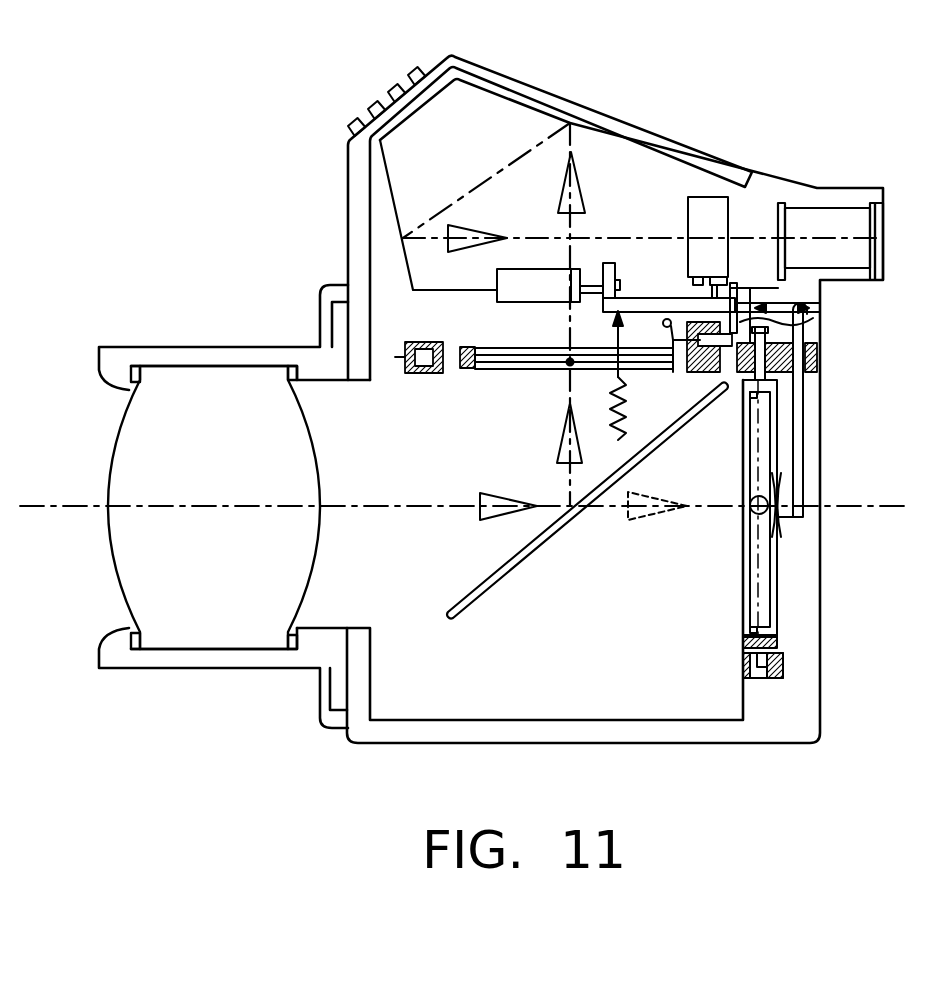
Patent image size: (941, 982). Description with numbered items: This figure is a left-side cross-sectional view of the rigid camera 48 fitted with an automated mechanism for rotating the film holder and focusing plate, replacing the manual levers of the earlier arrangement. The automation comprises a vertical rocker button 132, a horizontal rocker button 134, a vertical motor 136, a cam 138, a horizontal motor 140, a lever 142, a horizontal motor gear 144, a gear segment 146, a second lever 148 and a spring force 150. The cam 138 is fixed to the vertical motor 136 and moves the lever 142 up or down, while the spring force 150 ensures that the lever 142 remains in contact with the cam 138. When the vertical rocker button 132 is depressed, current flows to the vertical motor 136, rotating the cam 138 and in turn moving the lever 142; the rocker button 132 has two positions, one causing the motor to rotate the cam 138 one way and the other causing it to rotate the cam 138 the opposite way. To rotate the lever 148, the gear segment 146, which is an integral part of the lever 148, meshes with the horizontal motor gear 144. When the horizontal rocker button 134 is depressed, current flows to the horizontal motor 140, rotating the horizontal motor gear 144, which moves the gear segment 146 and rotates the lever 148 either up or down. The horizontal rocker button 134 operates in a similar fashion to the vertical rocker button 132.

The rigid camera 48 is at (218, 257).
The vertical rocker button 132 is at (413, 63).
The horizontal rocker button 134 is at (377, 96).
The vertical motor 136 is at (553, 268).
The cam 138 is at (610, 263).
The horizontal motor 140 is at (707, 197).
The lever 142 is at (668, 298).
The horizontal motor gear 144 is at (717, 287).
The gear segment 146 is at (745, 282).
The lever 148 is at (806, 316).
The spring force 150 is at (633, 400).